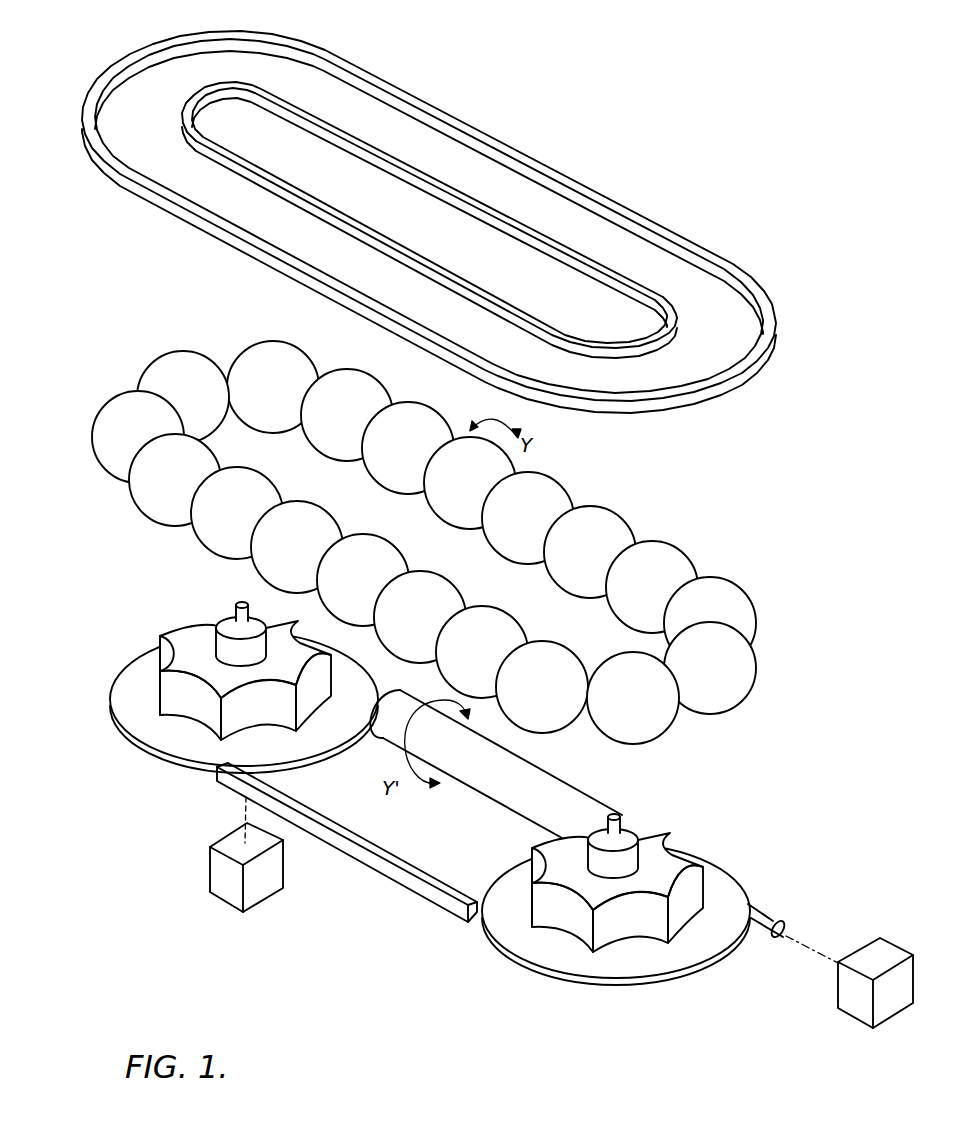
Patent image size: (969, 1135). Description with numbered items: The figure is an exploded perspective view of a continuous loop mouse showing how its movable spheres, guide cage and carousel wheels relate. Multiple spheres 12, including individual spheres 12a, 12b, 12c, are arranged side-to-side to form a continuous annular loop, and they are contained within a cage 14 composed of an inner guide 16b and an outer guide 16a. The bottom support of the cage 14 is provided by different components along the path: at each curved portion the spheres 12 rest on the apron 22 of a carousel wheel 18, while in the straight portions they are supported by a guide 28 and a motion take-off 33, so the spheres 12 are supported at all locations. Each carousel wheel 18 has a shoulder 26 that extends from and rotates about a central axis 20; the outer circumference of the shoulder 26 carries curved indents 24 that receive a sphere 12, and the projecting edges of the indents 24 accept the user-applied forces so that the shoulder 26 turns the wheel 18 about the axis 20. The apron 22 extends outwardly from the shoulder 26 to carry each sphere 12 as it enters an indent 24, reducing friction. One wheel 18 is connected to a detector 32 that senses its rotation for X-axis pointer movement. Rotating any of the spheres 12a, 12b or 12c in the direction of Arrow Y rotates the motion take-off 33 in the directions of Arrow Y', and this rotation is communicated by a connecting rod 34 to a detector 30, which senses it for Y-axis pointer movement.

The spheres 12 is at (402, 536).
The sphere 12a is at (409, 461).
The sphere 12b is at (476, 497).
The sphere 12c is at (540, 527).
The cage 14 is at (395, 214).
The outer guide 16a is at (86, 112).
The inner guide 16b is at (188, 110).
The carousel wheel 18 is at (407, 828).
The central axis 20 is at (238, 612).
The apron 22 is at (125, 693).
The indents 24 is at (569, 922).
The shoulder 26 is at (192, 650).
The guide 28 is at (360, 853).
The detector 30 is at (855, 1018).
The detector 32 is at (218, 870).
The motion take-off 33 is at (563, 807).
The connecting rod 34 is at (766, 912).